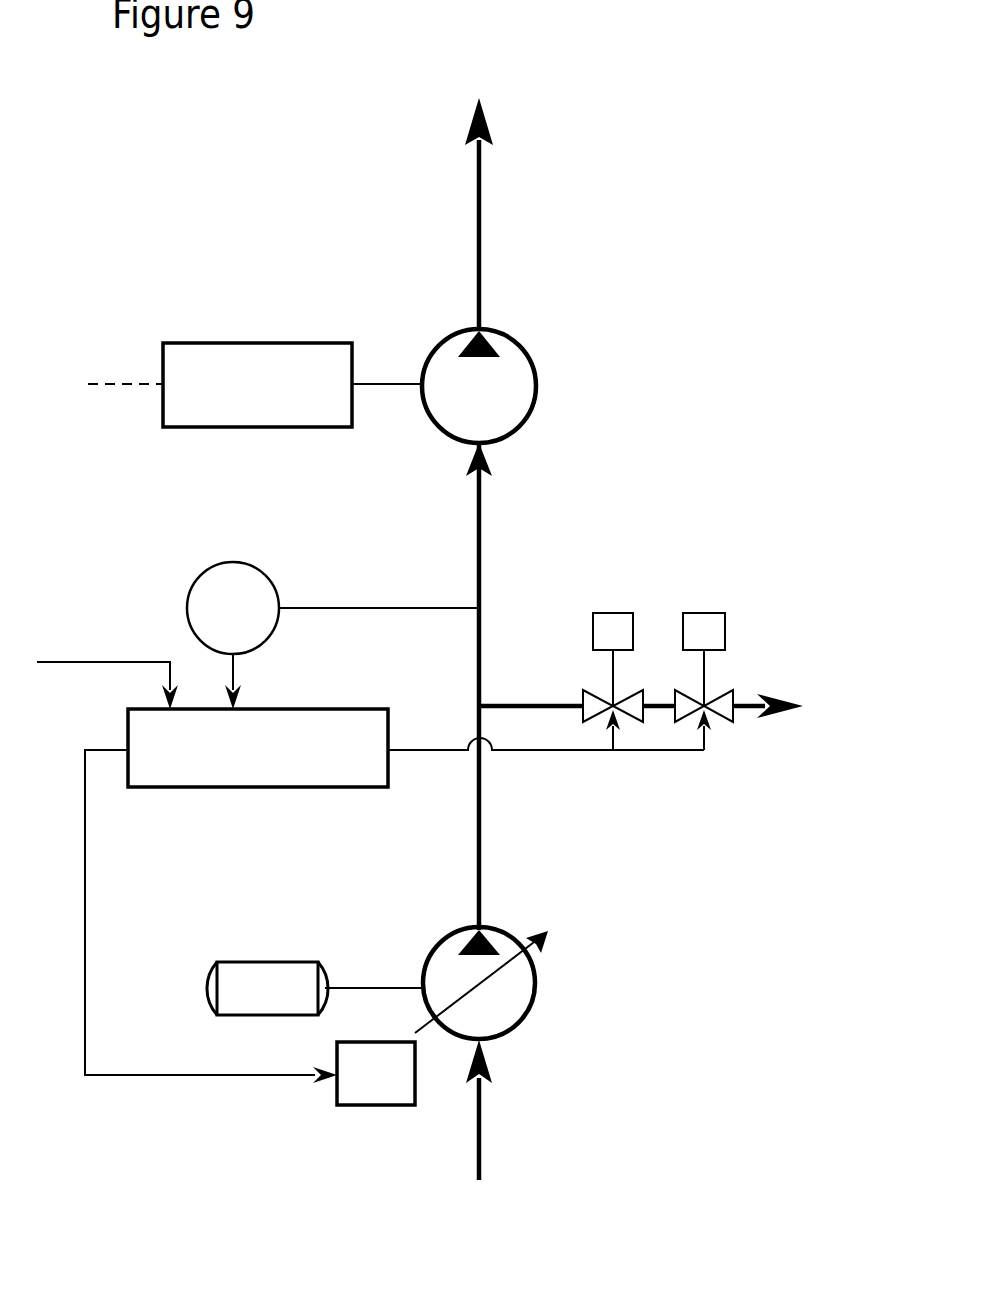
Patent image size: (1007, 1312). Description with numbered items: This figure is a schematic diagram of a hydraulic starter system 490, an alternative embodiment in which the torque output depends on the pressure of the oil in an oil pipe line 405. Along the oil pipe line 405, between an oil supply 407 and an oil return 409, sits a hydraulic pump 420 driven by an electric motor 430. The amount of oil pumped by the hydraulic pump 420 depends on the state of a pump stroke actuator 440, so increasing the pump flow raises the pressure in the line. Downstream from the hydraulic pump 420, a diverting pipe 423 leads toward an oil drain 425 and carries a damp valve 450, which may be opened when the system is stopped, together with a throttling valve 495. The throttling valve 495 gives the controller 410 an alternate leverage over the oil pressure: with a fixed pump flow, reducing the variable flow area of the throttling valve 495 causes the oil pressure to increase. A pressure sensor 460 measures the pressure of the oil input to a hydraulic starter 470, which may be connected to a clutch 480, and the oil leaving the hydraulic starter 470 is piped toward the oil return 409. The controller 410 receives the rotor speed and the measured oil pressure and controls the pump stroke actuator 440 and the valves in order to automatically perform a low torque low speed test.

The hydraulic starter system 490 is at (183, 180).
The oil return 409 is at (476, 196).
The hydraulic starter 470 is at (510, 377).
The clutch 480 is at (223, 363).
The pressure sensor 460 is at (263, 568).
The controller 410 is at (217, 788).
The oil pipe line 405 is at (479, 842).
The diverting pipe 423 is at (520, 703).
The damp valve 450 is at (638, 720).
The throttling valve 495 is at (728, 720).
The oil drain 425 is at (795, 707).
The hydraulic pump 420 is at (534, 997).
The electric motor 430 is at (228, 985).
The pump stroke actuator 440 is at (350, 1083).
The oil supply 407 is at (480, 1129).